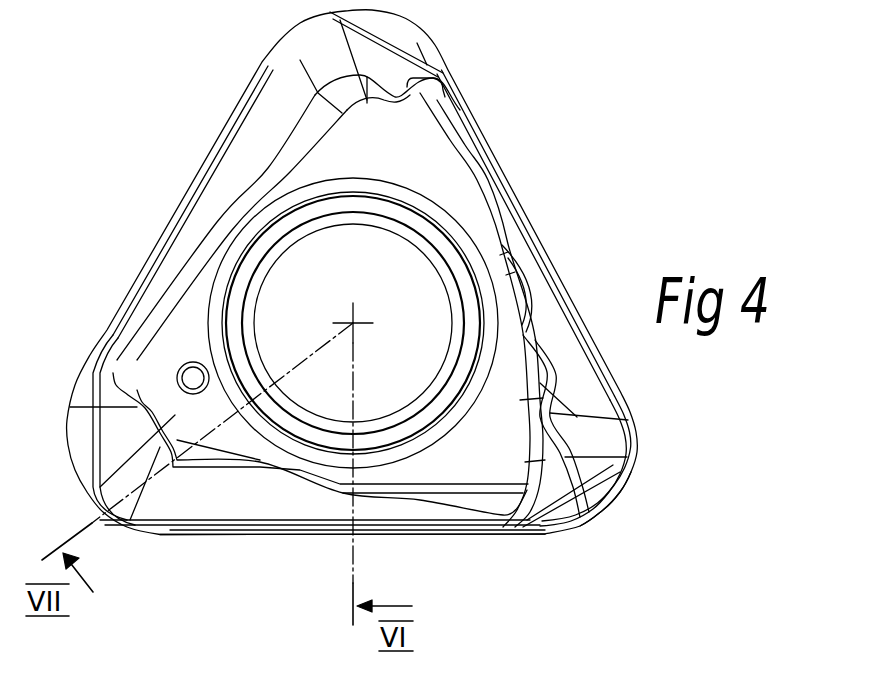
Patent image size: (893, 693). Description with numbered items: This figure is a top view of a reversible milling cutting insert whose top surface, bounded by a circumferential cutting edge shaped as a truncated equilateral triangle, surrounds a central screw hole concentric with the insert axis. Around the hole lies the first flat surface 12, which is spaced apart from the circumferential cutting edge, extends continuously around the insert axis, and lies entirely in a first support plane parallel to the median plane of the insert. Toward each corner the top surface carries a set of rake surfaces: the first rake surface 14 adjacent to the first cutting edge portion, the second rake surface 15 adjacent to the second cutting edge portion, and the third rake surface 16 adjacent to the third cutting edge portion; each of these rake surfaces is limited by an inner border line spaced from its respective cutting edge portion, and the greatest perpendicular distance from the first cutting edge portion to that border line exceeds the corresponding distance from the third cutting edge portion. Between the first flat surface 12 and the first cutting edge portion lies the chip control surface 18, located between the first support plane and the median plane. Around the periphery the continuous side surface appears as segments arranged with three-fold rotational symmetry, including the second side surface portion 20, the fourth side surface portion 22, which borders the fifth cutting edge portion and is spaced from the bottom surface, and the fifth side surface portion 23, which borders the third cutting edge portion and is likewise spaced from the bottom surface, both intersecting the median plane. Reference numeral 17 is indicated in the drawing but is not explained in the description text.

The first flat surface 12 is at (506, 457).
The first rake surface 14 is at (580, 354).
The second rake surface 15 is at (617, 447).
The third rake surface 16 is at (583, 474).
The transition edge 17 is at (553, 398).
The chip control surface 18 is at (437, 97).
The second side surface portion 20 is at (228, 134).
The fourth side surface portion 22 is at (552, 524).
The fifth side surface portion 23 is at (600, 493).